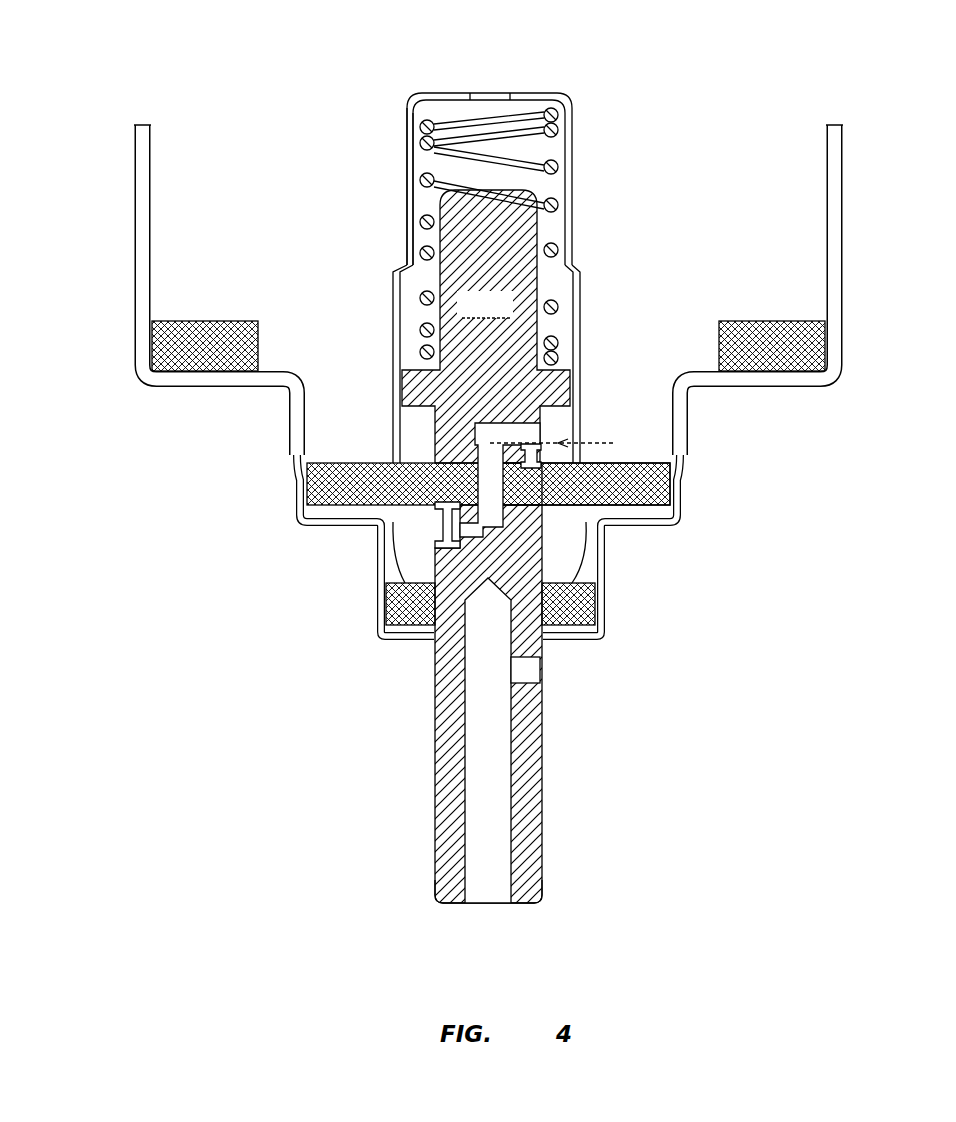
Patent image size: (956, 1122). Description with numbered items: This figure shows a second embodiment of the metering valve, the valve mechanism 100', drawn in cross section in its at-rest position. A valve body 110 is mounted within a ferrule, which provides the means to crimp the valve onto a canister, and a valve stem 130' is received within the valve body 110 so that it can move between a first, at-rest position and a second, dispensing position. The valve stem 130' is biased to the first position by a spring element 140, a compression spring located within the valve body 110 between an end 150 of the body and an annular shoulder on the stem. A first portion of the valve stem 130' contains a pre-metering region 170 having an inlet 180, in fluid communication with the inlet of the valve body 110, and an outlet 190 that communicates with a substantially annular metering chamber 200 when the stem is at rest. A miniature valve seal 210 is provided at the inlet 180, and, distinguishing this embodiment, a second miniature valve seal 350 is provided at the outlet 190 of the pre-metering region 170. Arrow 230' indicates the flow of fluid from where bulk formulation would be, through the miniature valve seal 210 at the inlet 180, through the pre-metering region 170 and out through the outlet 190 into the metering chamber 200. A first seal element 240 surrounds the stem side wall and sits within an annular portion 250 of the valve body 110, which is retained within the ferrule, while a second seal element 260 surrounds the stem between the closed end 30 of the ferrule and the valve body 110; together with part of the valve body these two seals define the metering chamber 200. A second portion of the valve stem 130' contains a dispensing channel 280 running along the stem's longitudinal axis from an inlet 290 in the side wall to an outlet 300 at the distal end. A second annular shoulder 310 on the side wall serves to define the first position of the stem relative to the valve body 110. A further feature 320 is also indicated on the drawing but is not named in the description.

The closed end 30 is at (397, 643).
The valve mechanism 100' is at (523, 456).
The valve body 110 is at (407, 207).
The valve stem 130' is at (486, 546).
The spring element 140 is at (552, 202).
The end 150 is at (549, 93).
The pre-metering region 170 is at (483, 442).
The inlet 180 is at (643, 563).
The outlet 190 is at (330, 541).
The metering chamber 200 is at (410, 548).
The miniature valve seal 210 is at (540, 470).
The arrow 230' is at (597, 403).
The first seal element 240 is at (303, 478).
The annular portion 250 is at (675, 488).
The second seal element 260 is at (583, 640).
The dispensing channel 280 is at (500, 815).
The inlet 290 is at (543, 670).
The outlet 300 is at (485, 882).
The second annular shoulder 310 is at (600, 590).
The wall step 320 is at (400, 265).
The second miniature valve seal 350 is at (427, 530).